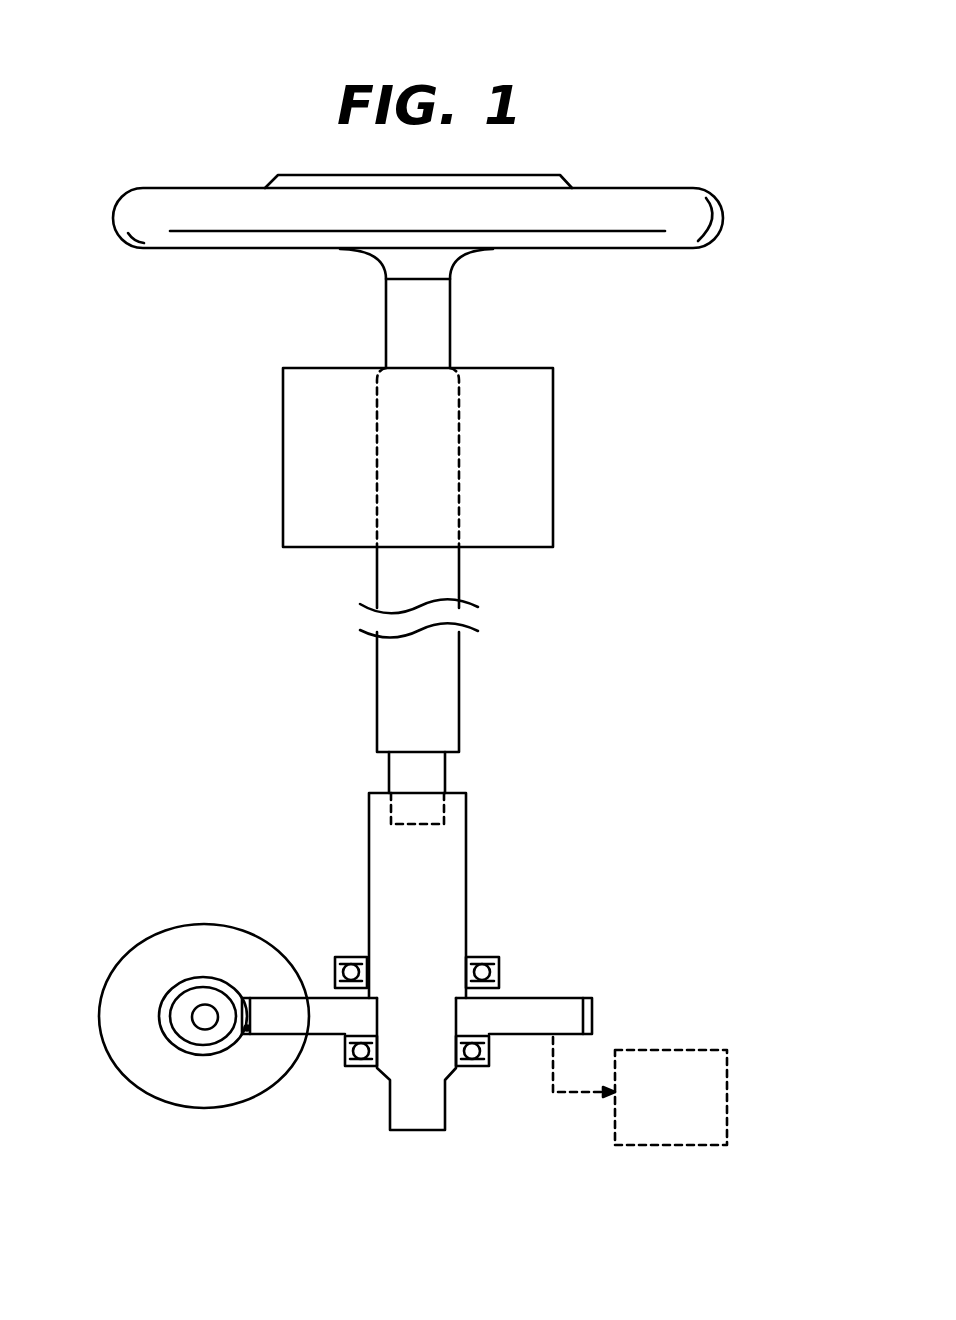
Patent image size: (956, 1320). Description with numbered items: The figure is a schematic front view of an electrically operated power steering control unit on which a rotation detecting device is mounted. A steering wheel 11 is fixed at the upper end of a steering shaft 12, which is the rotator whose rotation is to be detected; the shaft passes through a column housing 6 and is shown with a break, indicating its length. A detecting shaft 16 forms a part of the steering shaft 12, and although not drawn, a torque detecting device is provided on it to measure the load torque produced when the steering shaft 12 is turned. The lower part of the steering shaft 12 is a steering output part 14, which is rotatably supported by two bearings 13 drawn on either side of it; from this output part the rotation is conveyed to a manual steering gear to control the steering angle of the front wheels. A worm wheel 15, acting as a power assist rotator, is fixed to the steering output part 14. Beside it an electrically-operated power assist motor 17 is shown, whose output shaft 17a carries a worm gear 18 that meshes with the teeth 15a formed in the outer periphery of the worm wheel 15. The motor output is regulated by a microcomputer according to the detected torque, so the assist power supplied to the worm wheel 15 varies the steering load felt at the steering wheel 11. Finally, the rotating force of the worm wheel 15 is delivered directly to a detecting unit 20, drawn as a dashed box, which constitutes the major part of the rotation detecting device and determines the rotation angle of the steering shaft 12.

The steering wheel 11 is at (722, 214).
The steering column housing 6 is at (540, 441).
The steering shaft 12 is at (452, 568).
The detecting shaft 16 is at (432, 776).
The steering output part 14 is at (452, 864).
The bearings 13 is at (336, 1037).
The worm wheel 15 is at (556, 1008).
The teeth 15a is at (246, 1036).
The power assist motor 17 is at (205, 940).
The output shaft 17a is at (196, 1026).
The worm gear 18 is at (208, 1040).
The detecting unit 20 is at (727, 1073).